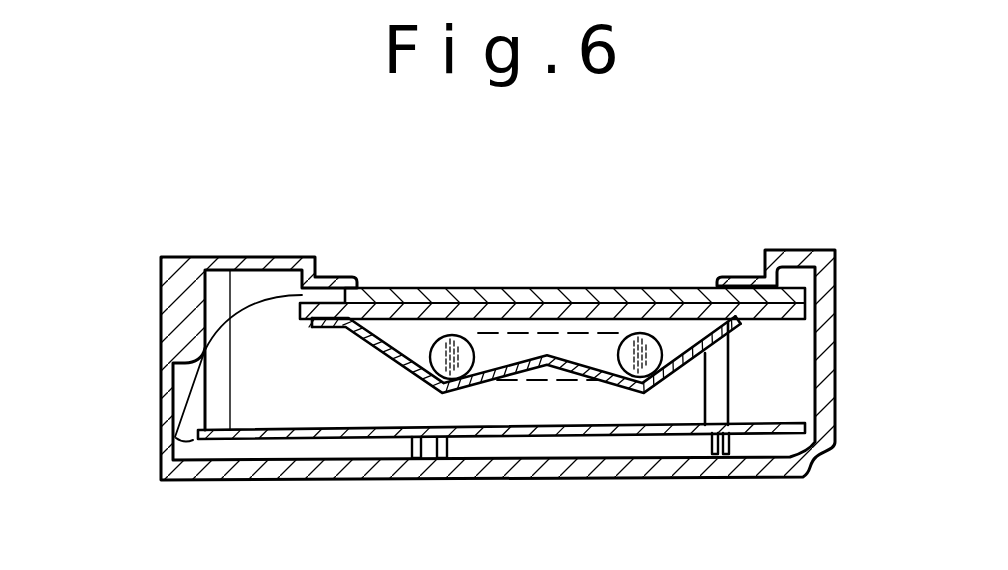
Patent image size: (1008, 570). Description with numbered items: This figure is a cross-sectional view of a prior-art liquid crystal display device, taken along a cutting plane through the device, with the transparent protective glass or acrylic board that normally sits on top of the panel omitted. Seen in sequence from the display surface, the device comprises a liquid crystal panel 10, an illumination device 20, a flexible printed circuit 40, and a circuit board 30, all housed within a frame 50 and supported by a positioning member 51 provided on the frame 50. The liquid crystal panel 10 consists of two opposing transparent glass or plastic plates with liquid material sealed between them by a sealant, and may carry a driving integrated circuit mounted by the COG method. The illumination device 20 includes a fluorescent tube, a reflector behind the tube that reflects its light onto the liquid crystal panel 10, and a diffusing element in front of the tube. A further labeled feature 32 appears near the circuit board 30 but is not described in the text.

The liquid crystal panel 10 is at (590, 286).
The illumination device 20 is at (472, 351).
The circuit board 30 is at (363, 439).
The terminal 32 is at (175, 441).
The flexible printed circuit 40 is at (168, 386).
The frame 50 is at (165, 307).
The positioning member 51 is at (218, 405).